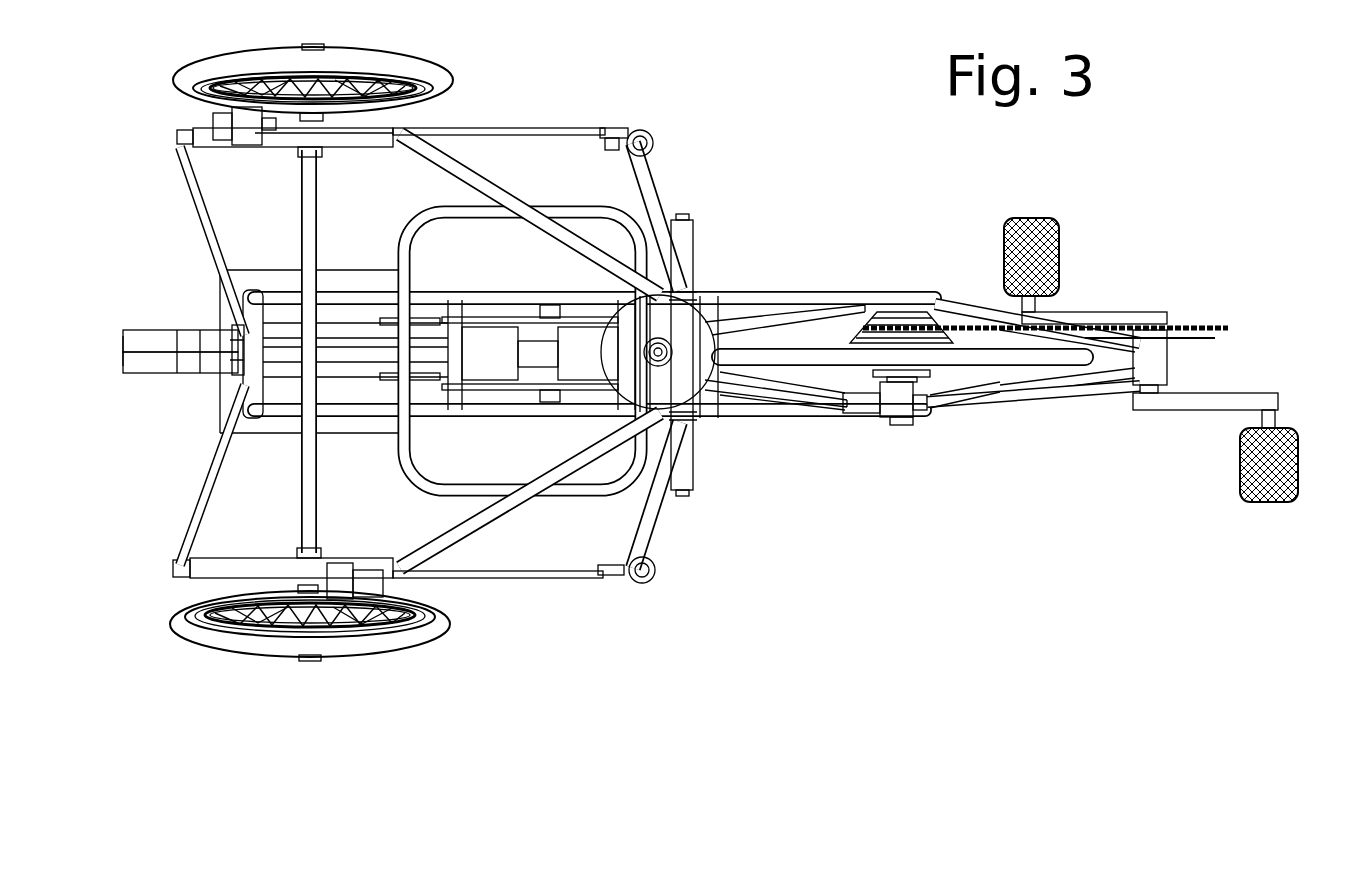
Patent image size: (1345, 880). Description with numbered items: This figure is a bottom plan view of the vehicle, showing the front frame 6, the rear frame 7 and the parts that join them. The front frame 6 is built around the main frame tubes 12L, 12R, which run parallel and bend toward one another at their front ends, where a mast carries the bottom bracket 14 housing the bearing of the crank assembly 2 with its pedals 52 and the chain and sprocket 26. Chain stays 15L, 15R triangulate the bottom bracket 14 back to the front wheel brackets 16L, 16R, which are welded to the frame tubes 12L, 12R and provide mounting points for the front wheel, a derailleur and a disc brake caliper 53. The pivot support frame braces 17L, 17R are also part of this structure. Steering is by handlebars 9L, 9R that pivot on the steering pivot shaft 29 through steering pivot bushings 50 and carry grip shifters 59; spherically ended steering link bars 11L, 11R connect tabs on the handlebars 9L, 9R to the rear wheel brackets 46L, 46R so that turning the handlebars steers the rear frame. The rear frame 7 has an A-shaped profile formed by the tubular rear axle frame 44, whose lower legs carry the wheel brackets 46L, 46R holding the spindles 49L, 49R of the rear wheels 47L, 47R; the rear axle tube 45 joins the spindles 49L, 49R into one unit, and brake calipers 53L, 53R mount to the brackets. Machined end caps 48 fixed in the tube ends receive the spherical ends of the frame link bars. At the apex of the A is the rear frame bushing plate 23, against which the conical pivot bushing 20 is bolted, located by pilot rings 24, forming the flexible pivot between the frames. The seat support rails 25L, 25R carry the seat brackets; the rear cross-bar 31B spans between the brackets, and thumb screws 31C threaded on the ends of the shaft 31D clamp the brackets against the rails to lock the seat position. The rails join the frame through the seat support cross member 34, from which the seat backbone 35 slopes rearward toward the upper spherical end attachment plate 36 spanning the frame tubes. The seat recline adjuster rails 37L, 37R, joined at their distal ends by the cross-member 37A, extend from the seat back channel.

The crank assembly 2 is at (1125, 312).
The front frame 6 is at (950, 415).
The rear frame 7 is at (470, 182).
The steering handle bar 9R is at (700, 292).
The steering handle bar 9L is at (680, 555).
The spherically ended link bar (steering) 11R is at (578, 130).
The spherically ended link bar (steering) 11L is at (600, 582).
The frame tube 12R is at (840, 300).
The frame tube 12L is at (830, 420).
The bottom bracket 14 is at (1168, 358).
The chain stay 15R is at (1040, 328).
The chain stay 15L is at (1010, 410).
The wheel bracket 16R is at (935, 312).
The wheel bracket 16L is at (930, 420).
The pivot support frame brace 17R is at (845, 322).
The pivot support frame brace 17L is at (740, 425).
The pivot bushing (conical) 20 is at (680, 380).
The rear frame bushing plate 23 is at (610, 488).
The bushing pilot ring 24 is at (735, 303).
The seat support rail 25R is at (488, 330).
The seat support rail 25L is at (482, 395).
The chain and sprocket 26 is at (1230, 328).
The steering pivot shaft 29 is at (745, 370).
The rear cross-bar 31B is at (490, 353).
The thumb screws 31C is at (548, 303).
The shaft 31D is at (569, 353).
The seat support cross member 34 is at (455, 388).
The seat backbone 35 is at (358, 358).
The upper spherical end attachment plate 36 is at (240, 420).
The seat recline adjuster rail 37R is at (160, 305).
The seat recline adjuster rail 37L is at (165, 375).
The cross-member 37A is at (123, 350).
The rear axle frame 44 is at (470, 140).
The rear axle tube 45 is at (318, 193).
The rear wheel bracket 46R is at (245, 128).
The rear wheel bracket 46L is at (175, 596).
The rear wheel 47R is at (403, 60).
The rear wheel 47L is at (430, 655).
The rear axle end caps 48 is at (200, 148).
The rear axle spindle 49R is at (325, 158).
The rear axle spindle 49L is at (332, 555).
The steering pivot bushings 50 is at (695, 485).
The pedals 52 is at (1060, 232).
The brake caliper 53 is at (895, 425).
The brake caliper 53R is at (262, 150).
The brake caliper 53L is at (445, 596).
The gear shifter and grips 59 is at (655, 140).